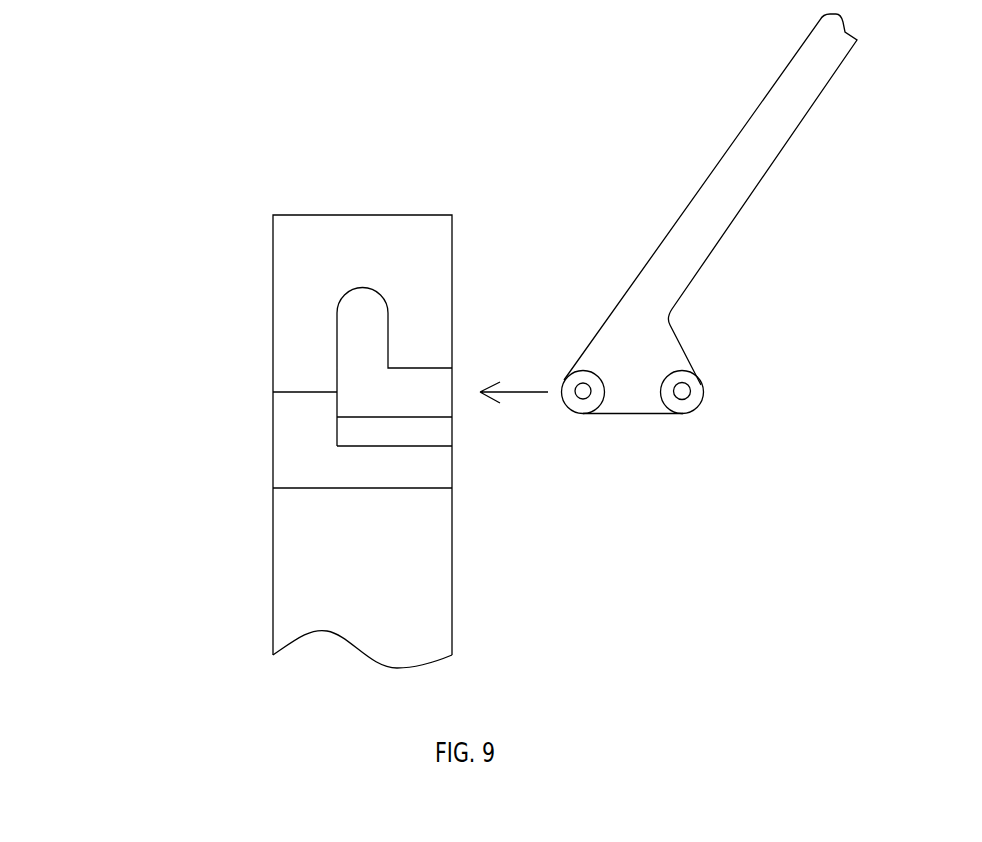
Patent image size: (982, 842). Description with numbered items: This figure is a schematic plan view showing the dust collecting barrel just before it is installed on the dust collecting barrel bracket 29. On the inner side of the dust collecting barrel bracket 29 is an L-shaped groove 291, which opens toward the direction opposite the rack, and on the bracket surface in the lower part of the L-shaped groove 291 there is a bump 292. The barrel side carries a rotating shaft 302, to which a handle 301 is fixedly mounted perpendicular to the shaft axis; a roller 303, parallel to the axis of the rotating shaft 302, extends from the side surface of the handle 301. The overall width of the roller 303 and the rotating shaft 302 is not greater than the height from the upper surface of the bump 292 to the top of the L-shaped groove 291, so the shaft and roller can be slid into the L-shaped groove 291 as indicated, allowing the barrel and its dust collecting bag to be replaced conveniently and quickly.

The dust collecting barrel bracket 29 is at (364, 578).
The L-shaped groove 291 is at (364, 352).
The bump 292 is at (364, 465).
The handle 301 is at (717, 197).
The rotating shaft 302 is at (595, 398).
The roller 303 is at (695, 398).